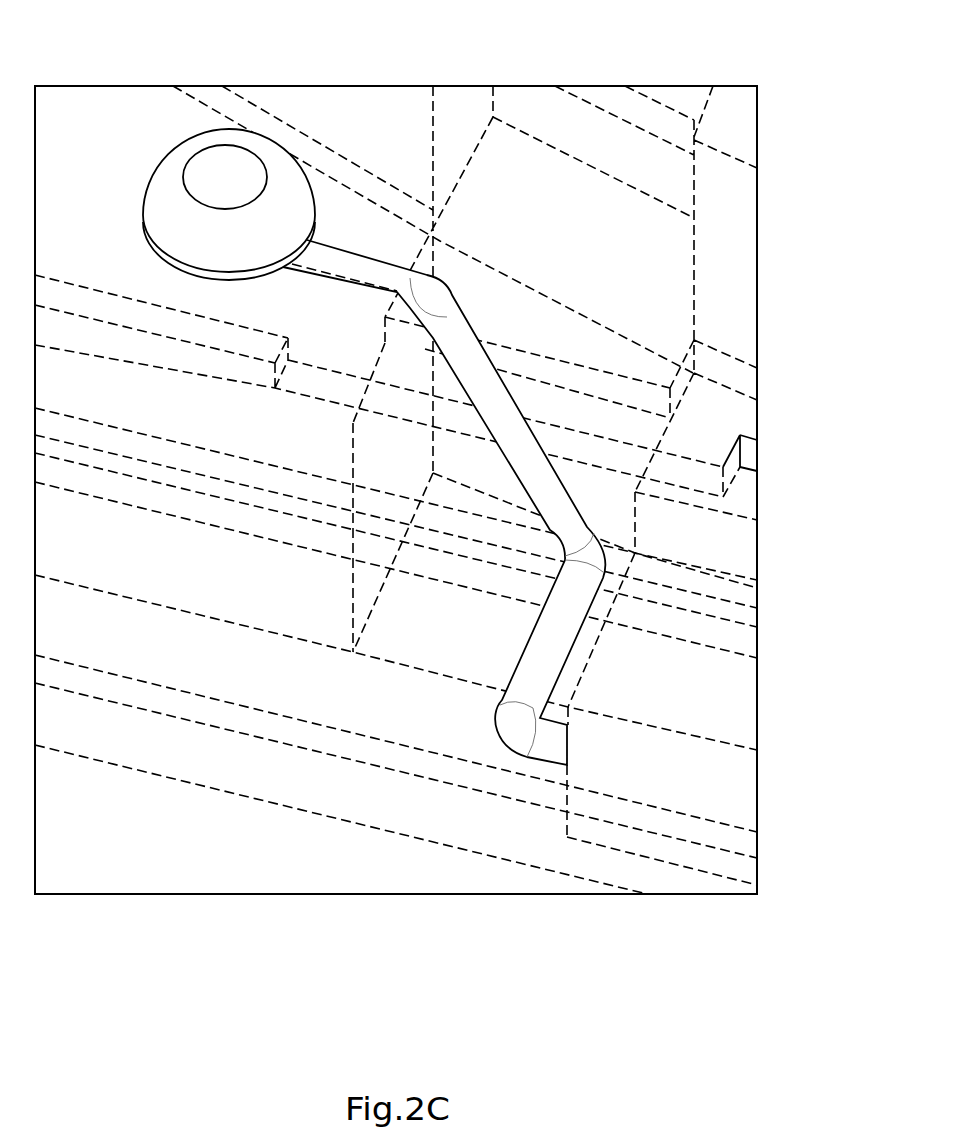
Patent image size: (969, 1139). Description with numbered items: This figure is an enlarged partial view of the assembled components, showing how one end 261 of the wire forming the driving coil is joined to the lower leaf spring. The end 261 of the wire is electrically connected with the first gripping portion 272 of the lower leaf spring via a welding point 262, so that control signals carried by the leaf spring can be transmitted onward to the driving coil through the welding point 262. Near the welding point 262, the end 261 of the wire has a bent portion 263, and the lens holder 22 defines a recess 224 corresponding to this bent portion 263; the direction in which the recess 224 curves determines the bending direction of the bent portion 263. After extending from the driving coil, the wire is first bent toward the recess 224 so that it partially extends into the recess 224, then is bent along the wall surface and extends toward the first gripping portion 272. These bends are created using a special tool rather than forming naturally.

The lens holder 22 is at (733, 248).
The recess 224 is at (408, 627).
The one end of the wire 261 is at (495, 752).
The welding point 262 is at (172, 207).
The bent portion 263 is at (427, 293).
The first gripping portion 272 is at (352, 177).